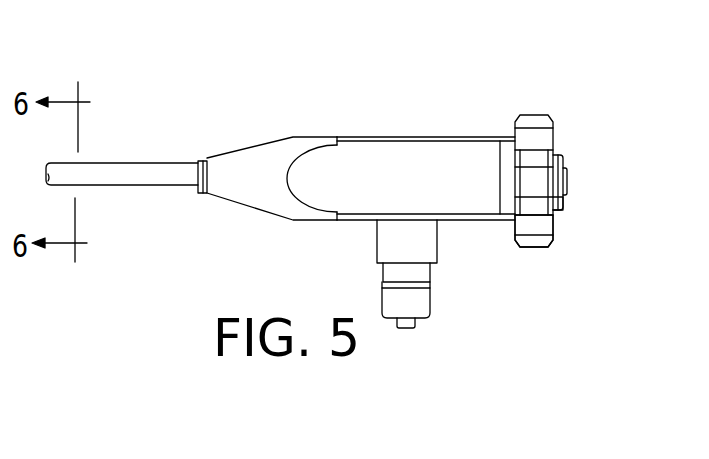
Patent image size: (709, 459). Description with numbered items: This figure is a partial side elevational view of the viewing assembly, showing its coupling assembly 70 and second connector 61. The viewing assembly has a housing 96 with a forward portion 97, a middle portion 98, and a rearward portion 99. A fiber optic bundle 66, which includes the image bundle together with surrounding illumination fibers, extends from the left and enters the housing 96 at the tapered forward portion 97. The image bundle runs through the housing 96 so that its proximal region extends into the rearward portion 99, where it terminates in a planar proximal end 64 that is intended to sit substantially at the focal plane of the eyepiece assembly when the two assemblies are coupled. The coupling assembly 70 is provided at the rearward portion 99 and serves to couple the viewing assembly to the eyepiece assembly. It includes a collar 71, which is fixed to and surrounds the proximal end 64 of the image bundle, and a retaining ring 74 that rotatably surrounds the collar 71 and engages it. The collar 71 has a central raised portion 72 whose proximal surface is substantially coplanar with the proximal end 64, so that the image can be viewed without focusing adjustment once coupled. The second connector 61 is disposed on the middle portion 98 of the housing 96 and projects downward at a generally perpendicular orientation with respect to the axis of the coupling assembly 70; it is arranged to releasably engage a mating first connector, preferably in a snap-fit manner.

The second connector 61 is at (416, 310).
The planar proximal end 64 is at (568, 182).
The fiber optic bundle 66 is at (92, 176).
The coupling assembly 70 is at (535, 114).
The collar 71 is at (557, 210).
The central raised portion 72 is at (567, 185).
The retaining ring 74 is at (533, 227).
The housing 96 is at (338, 137).
The forward portion 97 is at (233, 168).
The middle portion 98 is at (372, 180).
The rearward portion 99 is at (505, 180).